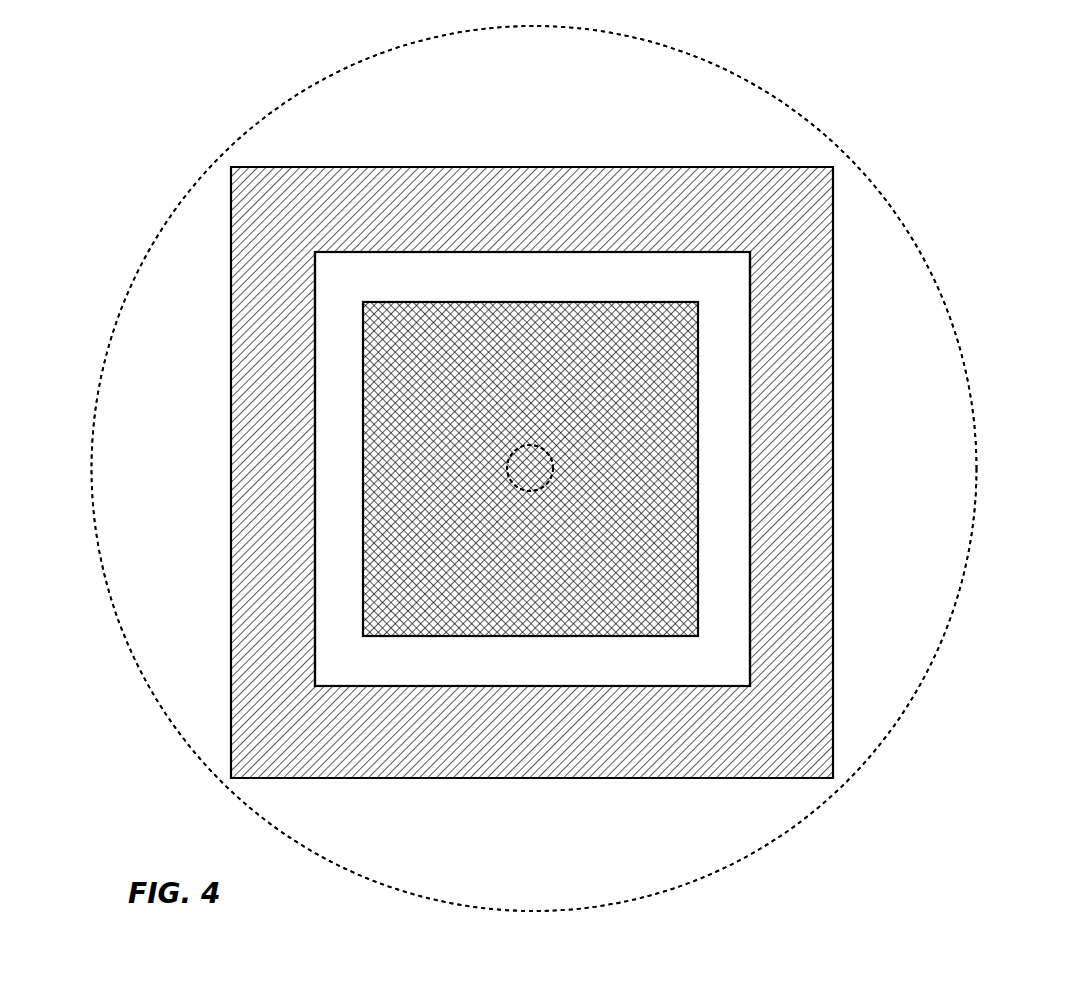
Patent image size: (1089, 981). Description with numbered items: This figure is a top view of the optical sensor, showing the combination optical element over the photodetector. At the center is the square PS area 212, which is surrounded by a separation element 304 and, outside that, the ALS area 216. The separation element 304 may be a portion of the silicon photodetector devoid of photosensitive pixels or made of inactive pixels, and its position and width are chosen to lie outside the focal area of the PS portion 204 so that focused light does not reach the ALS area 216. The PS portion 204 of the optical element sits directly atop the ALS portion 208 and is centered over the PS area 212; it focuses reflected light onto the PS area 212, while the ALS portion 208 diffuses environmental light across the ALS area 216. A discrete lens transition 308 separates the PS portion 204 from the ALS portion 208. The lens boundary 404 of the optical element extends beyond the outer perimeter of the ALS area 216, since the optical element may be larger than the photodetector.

The lens boundary 404 is at (877, 192).
The ambient light sensing portion 208 is at (957, 468).
The ALS area 216 is at (232, 472).
The separation element 304 is at (373, 660).
The PS area 212 is at (607, 608).
The lens transition 308 is at (556, 466).
The photosensing portion 204 is at (548, 478).